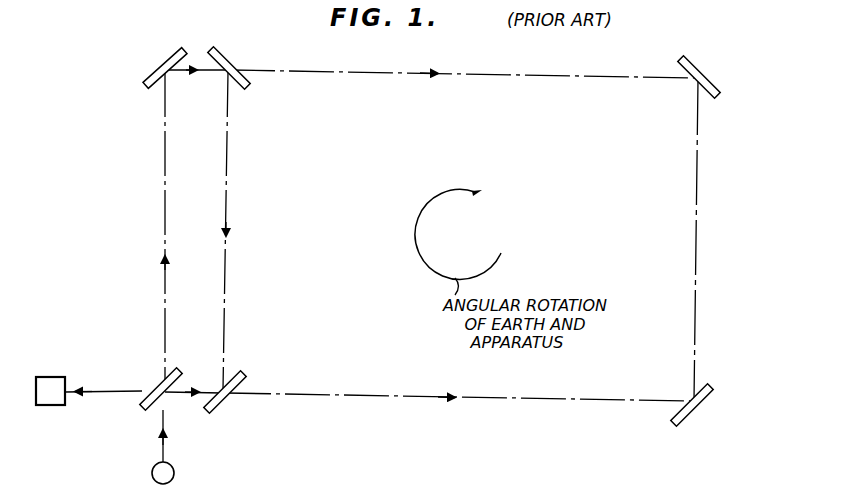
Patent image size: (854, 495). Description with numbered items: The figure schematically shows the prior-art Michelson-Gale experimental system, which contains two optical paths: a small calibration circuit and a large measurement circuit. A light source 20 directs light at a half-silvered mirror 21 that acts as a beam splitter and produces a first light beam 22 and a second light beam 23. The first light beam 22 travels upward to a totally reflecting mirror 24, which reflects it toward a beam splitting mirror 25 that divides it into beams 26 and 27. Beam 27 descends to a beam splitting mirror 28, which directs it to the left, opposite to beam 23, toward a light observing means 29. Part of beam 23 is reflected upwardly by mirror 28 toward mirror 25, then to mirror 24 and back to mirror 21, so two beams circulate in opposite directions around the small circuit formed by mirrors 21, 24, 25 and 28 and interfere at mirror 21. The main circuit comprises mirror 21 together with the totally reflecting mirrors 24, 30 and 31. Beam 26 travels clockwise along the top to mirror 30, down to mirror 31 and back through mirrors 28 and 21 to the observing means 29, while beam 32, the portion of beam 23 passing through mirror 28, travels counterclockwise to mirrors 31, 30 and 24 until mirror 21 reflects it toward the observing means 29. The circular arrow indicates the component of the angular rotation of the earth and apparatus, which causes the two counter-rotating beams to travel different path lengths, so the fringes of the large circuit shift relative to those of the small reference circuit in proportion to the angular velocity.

The light source 20 is at (175, 473).
The mirror 21 is at (157, 385).
The first light beam 22 is at (164, 262).
The second light beam 23 is at (197, 383).
The totally reflecting mirror 24 is at (166, 64).
The beam splitting mirror 25 is at (227, 65).
The light beam 26 is at (433, 79).
The light beam 27 is at (228, 237).
The beam splitting mirror 28 is at (242, 376).
The light observing means 29 is at (56, 374).
The totally reflecting mirror 30 is at (708, 73).
The totally reflecting mirror 31 is at (700, 409).
The light beam 32 is at (462, 389).